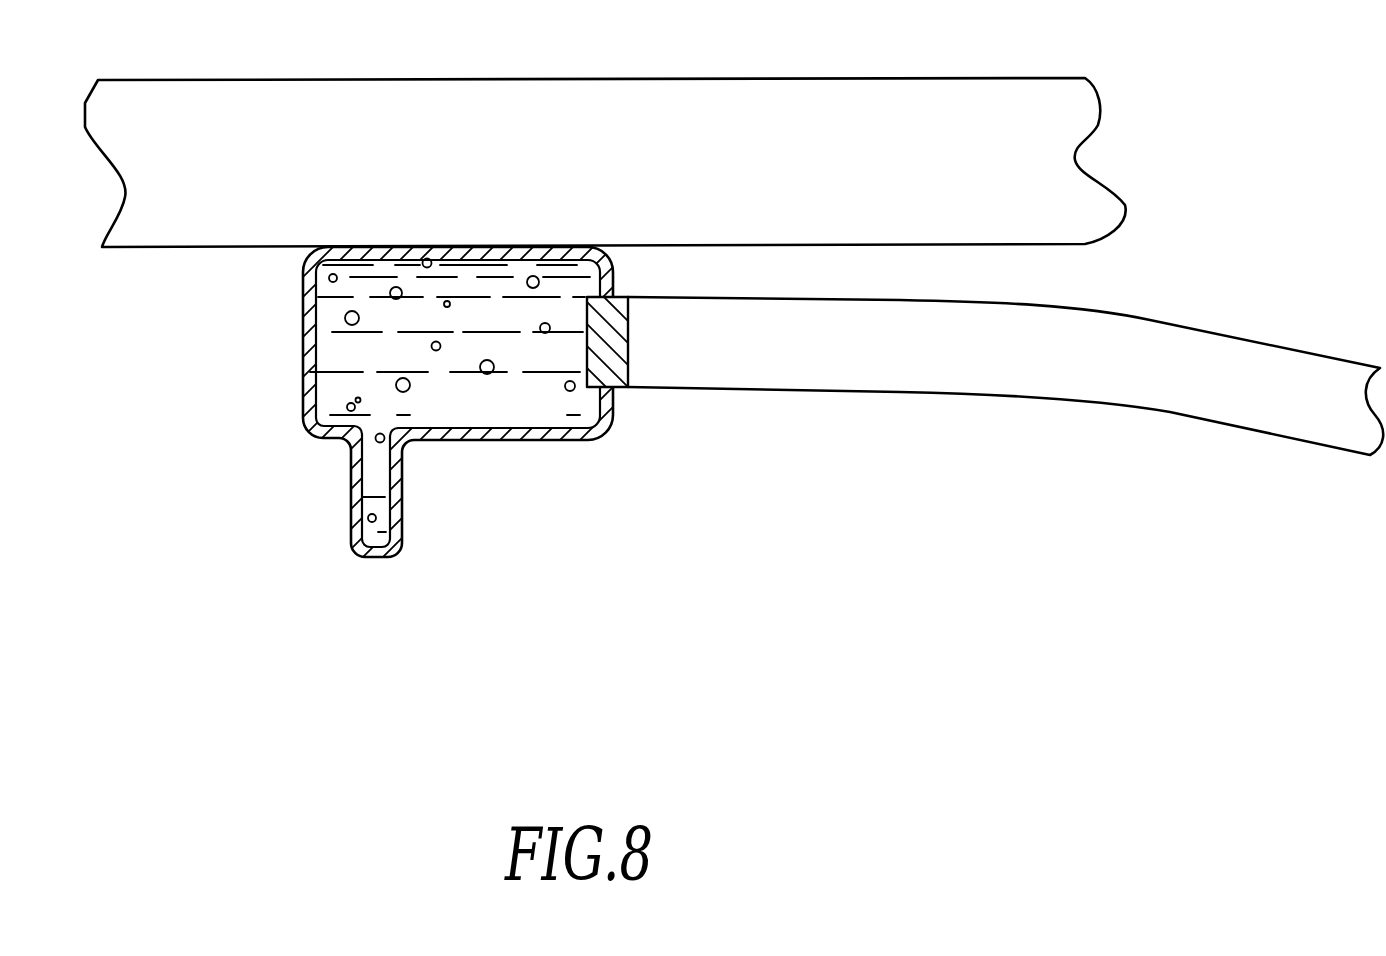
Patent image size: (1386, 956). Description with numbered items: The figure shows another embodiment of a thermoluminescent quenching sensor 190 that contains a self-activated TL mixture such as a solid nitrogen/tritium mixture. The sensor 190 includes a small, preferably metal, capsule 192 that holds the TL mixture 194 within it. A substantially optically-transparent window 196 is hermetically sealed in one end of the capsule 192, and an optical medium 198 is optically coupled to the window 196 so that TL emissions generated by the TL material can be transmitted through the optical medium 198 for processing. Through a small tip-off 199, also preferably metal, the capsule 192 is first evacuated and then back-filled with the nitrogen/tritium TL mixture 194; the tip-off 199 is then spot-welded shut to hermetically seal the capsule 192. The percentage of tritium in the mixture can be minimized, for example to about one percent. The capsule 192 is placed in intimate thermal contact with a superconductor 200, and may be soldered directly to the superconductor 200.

The quenching sensor 190 is at (500, 400).
The capsule 192 is at (305, 314).
The TL mixture 194 is at (327, 387).
The window 196 is at (612, 360).
The optical medium 198 is at (1243, 341).
The tip-off 199 is at (357, 497).
The superconductor 200 is at (815, 92).